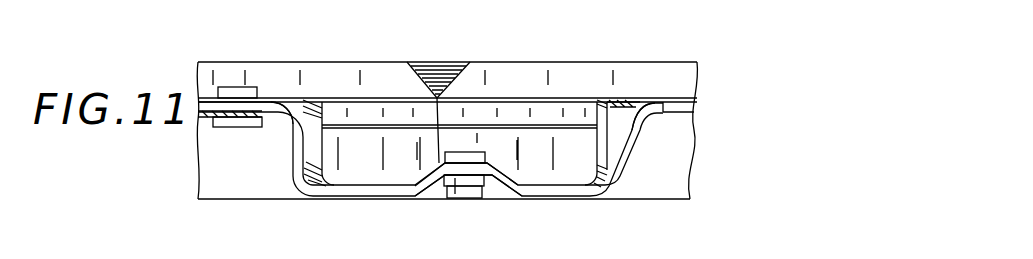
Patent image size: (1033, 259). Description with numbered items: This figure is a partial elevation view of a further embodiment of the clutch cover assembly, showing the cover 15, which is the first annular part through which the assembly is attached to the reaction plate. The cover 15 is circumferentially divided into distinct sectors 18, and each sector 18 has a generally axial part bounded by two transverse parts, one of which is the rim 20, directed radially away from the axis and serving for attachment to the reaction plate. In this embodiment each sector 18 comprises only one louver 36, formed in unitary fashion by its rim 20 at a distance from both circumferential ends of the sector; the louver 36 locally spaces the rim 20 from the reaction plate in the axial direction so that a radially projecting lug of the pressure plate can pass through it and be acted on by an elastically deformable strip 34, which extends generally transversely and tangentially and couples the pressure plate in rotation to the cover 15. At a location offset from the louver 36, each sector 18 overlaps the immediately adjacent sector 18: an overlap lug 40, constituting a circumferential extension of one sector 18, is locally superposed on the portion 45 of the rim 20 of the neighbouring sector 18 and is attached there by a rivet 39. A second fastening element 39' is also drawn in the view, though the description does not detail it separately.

The cover 15 is at (703, 63).
The sector 18 is at (390, 61).
The rim 20 is at (372, 192).
The elastically deformable strip 34 is at (208, 126).
The louver 36 is at (285, 155).
The upper mounting pad 39' is at (239, 64).
The rivet 39 is at (481, 145).
The overlap lug 40 is at (456, 199).
The portion of the rim 45 is at (442, 165).